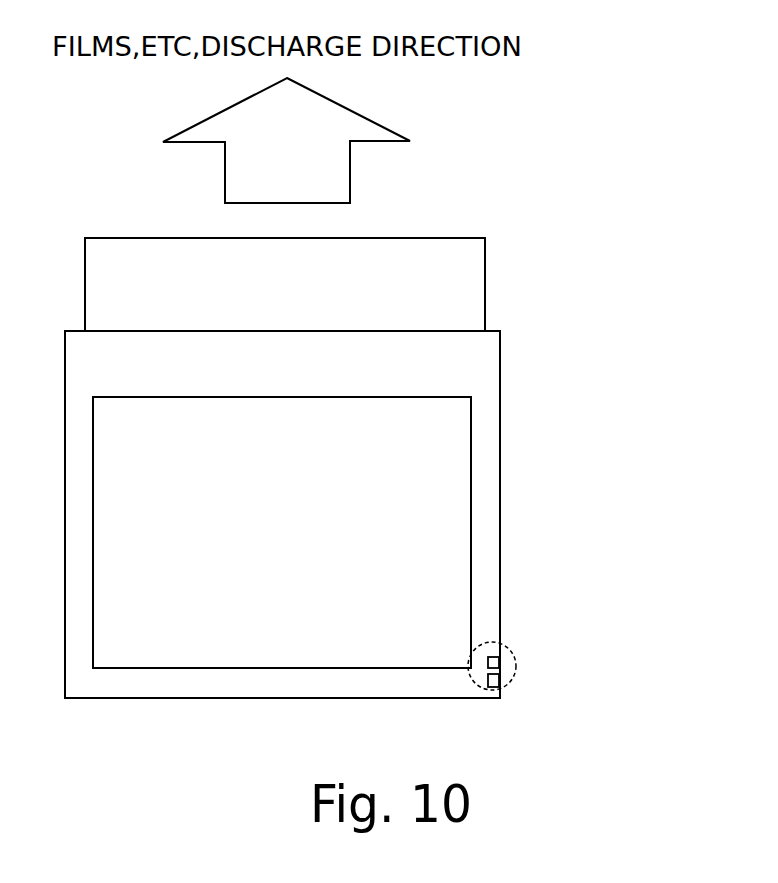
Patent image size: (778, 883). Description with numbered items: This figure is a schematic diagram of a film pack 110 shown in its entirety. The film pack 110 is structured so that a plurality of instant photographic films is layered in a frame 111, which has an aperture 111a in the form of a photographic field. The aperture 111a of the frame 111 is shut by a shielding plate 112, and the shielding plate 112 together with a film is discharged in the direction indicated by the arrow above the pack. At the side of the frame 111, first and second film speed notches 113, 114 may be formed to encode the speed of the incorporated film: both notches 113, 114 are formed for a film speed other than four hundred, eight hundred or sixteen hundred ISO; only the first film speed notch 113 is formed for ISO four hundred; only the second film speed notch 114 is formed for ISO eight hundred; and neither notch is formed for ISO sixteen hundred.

The film pack 110 is at (668, 349).
The frame 111 is at (490, 451).
The aperture 111a is at (418, 428).
The shielding plate 112 is at (472, 269).
The first film speed notch 113 is at (509, 660).
The second film speed notch 114 is at (513, 685).